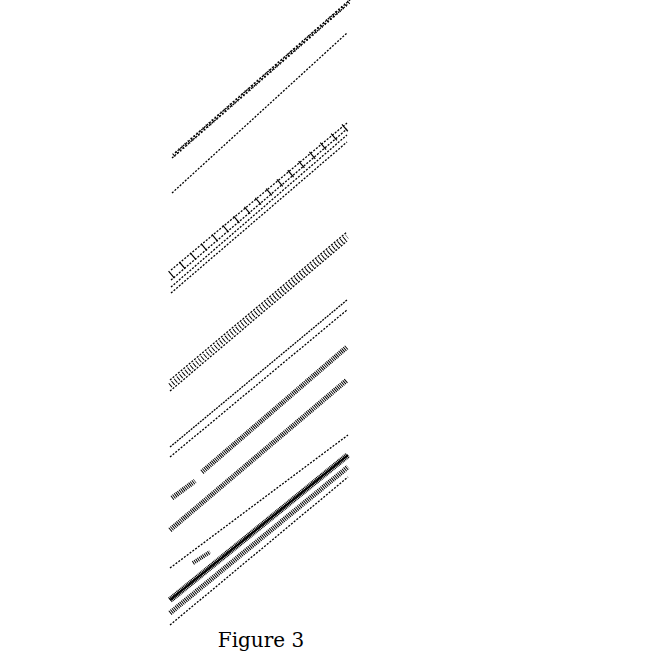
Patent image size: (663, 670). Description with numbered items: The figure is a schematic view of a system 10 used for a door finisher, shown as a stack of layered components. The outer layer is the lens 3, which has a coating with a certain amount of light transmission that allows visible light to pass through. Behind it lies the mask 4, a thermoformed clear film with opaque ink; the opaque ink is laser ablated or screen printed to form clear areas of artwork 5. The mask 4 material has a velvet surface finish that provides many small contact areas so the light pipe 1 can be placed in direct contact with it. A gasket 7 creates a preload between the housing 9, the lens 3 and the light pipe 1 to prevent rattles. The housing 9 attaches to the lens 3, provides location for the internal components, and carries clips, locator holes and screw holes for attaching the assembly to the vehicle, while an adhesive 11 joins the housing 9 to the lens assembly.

The light pipe 1 is at (200, 350).
The lens 3 is at (200, 148).
The mask 4 is at (170, 262).
The artwork 5 is at (218, 238).
The gasket 7 is at (185, 430).
The housing 9 is at (177, 583).
The system 10 is at (378, 334).
The adhesive 11 is at (180, 495).